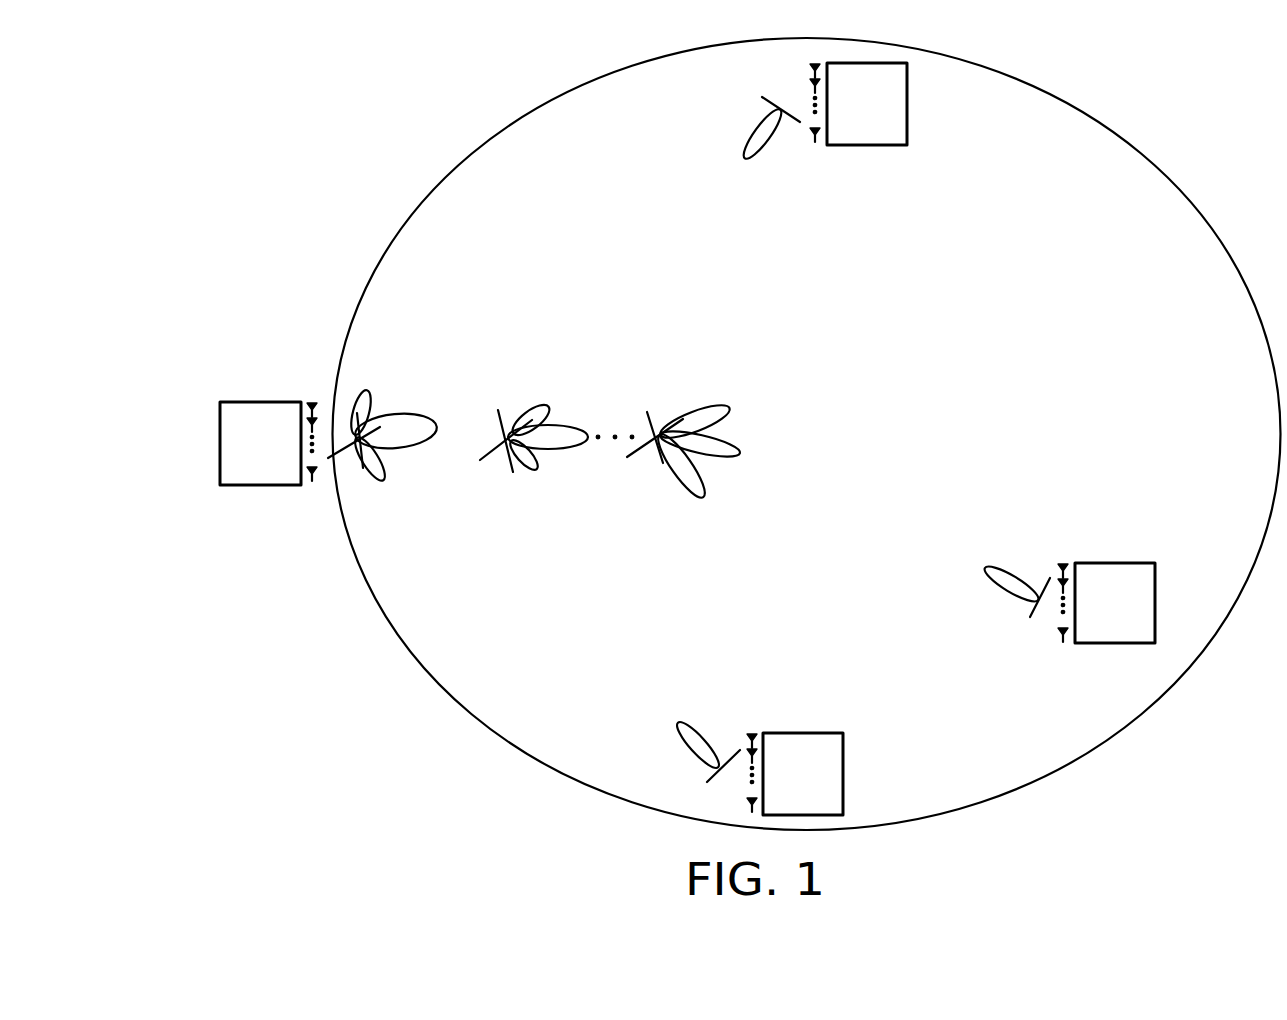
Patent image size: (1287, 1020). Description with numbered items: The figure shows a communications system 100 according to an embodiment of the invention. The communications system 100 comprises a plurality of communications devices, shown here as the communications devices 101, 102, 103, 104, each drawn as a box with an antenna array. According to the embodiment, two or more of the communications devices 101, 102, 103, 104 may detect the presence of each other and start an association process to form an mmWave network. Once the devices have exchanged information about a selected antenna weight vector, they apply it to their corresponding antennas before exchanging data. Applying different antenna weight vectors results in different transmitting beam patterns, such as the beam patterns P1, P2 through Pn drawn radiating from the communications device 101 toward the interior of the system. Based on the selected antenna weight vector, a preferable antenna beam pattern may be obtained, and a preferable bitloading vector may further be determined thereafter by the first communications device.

The communications system 100 is at (157, 68).
The communications device 101 is at (260, 402).
The communications device 102 is at (867, 145).
The communications device 103 is at (1114, 563).
The communications device 104 is at (803, 733).
The beam pattern P1 is at (402, 408).
The beam pattern P2 is at (567, 427).
The beam pattern Pn is at (703, 403).